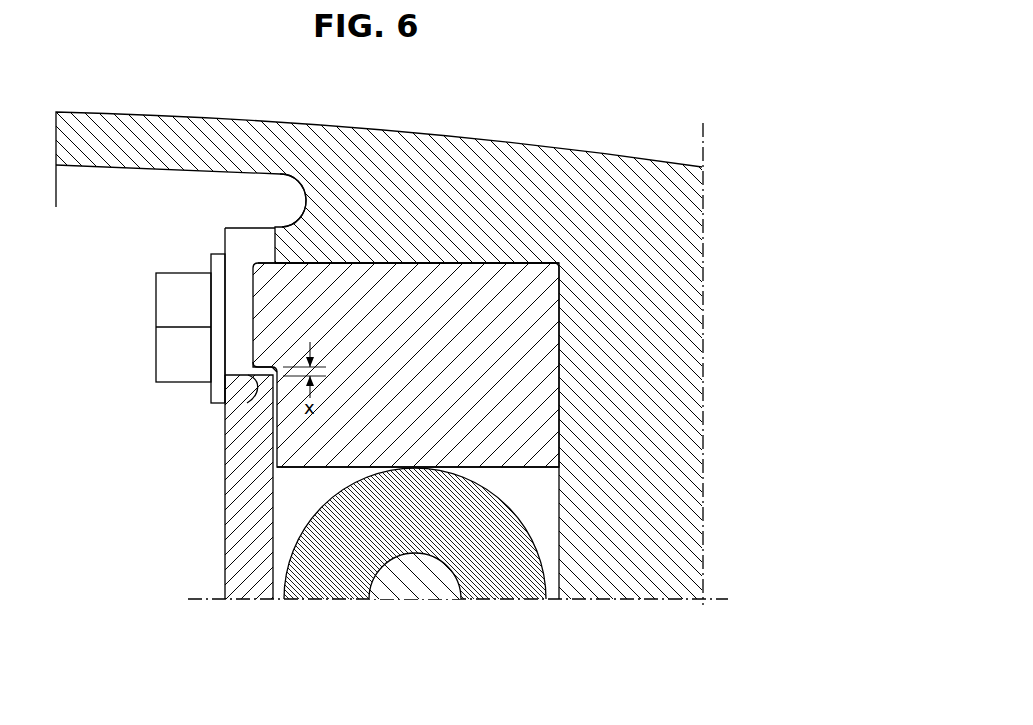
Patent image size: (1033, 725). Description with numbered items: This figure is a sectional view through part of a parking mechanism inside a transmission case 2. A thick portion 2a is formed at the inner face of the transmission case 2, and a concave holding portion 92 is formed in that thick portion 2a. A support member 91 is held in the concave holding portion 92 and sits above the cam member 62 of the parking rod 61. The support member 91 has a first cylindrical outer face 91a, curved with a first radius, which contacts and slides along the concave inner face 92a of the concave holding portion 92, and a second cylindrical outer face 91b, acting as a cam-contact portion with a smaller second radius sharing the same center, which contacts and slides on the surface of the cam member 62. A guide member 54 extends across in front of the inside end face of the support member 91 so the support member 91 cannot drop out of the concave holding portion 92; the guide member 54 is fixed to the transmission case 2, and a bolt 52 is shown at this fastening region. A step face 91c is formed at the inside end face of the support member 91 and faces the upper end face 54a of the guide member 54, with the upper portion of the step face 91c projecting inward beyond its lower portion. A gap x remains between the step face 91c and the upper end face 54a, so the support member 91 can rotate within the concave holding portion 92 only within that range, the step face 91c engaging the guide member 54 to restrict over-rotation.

The transmission case 2 is at (193, 127).
The thick portion 2a is at (290, 222).
The concave holding portion 92 is at (560, 286).
The concave inner face 92a is at (474, 263).
The support member 91 is at (537, 357).
The first cylindrical outer face 91a is at (470, 268).
The second cylindrical outer face 91b is at (520, 455).
The step face 91c is at (264, 366).
The bolt 52 is at (160, 356).
The guide member 54 is at (243, 548).
The upper end face 54a is at (248, 398).
The parking rod 61 is at (418, 585).
The cam member 62 is at (509, 585).